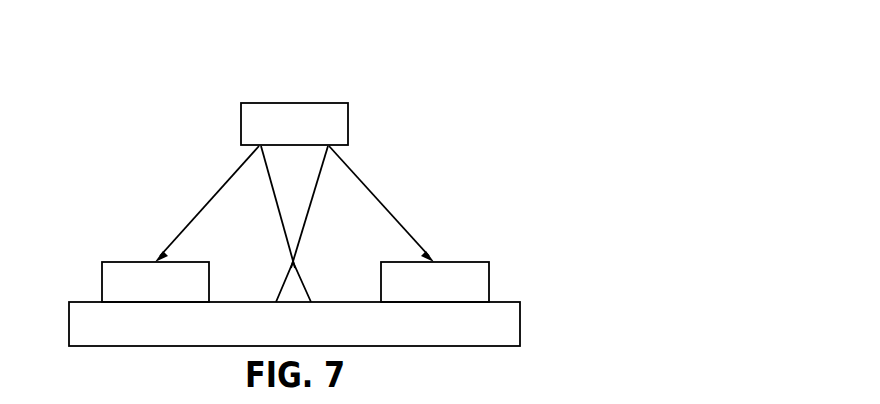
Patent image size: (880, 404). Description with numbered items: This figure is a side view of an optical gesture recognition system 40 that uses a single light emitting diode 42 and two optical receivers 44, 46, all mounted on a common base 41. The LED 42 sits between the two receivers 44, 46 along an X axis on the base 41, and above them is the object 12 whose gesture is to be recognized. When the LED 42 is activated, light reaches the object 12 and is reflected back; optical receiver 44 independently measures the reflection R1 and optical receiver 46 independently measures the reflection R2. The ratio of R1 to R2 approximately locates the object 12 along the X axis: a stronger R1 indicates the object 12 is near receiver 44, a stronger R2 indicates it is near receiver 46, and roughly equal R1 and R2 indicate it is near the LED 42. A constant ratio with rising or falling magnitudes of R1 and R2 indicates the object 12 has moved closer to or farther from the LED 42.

The optical gesture recognition system 40 is at (459, 101).
The object 12 is at (282, 137).
The reflection R1 is at (190, 220).
The reflection R2 is at (397, 220).
The light emitting diode 42 is at (303, 277).
The optical receiver 44 is at (143, 295).
The optical receiver 46 is at (423, 295).
The common base 41 is at (520, 327).